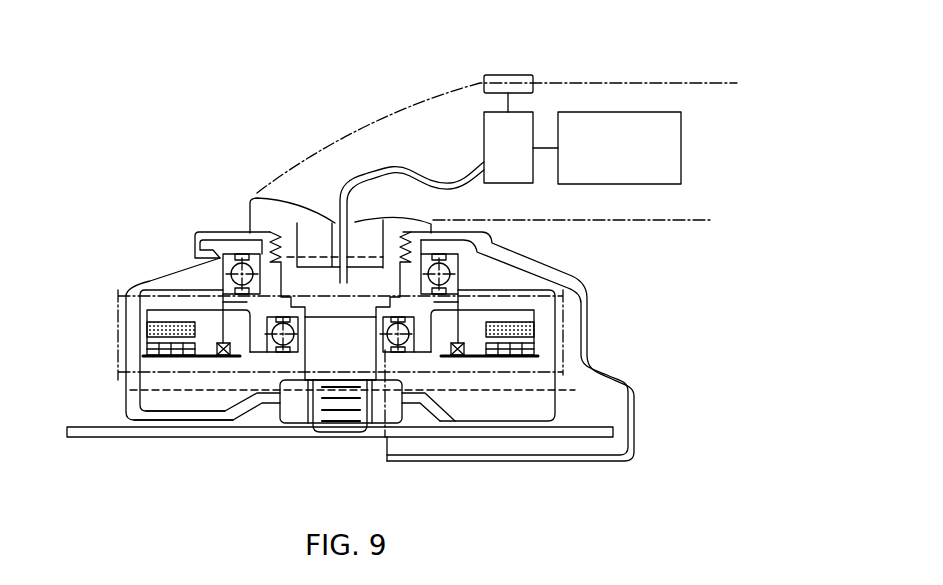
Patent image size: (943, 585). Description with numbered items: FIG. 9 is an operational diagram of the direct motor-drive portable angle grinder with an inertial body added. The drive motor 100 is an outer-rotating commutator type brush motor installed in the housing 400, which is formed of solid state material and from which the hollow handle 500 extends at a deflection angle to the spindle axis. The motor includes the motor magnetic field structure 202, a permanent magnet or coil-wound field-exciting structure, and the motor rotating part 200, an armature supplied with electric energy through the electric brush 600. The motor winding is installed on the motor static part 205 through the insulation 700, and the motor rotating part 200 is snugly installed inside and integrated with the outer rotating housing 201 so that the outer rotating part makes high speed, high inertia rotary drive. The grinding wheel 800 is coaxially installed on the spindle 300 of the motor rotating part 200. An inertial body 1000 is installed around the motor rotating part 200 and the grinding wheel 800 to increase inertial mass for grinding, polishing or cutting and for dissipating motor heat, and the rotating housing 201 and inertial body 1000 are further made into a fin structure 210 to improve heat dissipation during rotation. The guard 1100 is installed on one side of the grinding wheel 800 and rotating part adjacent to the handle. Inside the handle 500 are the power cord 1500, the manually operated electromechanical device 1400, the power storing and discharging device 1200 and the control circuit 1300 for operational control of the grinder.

The drive motor 100 is at (570, 325).
The motor rotating part 200 is at (533, 348).
The rotating housing 201 is at (147, 363).
The motor magnetic field structure 202 is at (147, 327).
The motor static part 205 is at (508, 315).
The fin structure 210 is at (160, 400).
The spindle 300 is at (328, 358).
The housing 400 is at (323, 180).
The handle 500 is at (690, 83).
The electric brush 600 is at (232, 356).
The insulation 700 is at (147, 355).
The grinding wheel 800 is at (167, 438).
The inertial body 1000 is at (558, 397).
The guard 1100 is at (637, 430).
The power storing and discharging device 1200 is at (682, 163).
The control circuit 1300 is at (484, 127).
The manually operated electromechanical device 1400 is at (510, 74).
The power cord 1500 is at (360, 177).